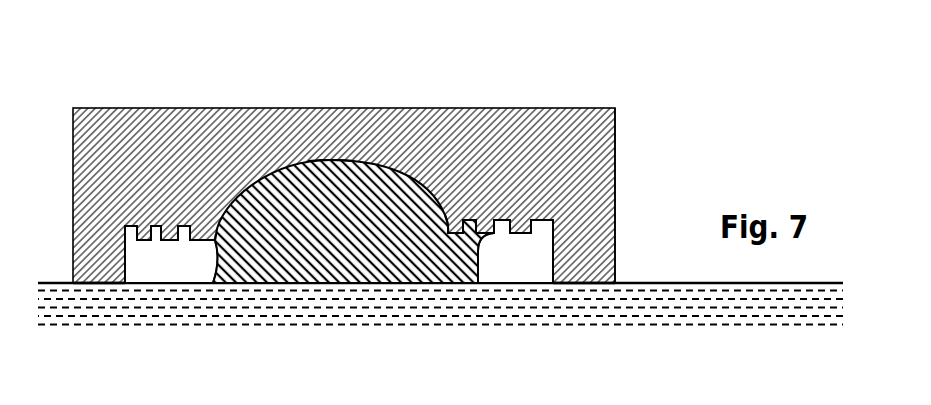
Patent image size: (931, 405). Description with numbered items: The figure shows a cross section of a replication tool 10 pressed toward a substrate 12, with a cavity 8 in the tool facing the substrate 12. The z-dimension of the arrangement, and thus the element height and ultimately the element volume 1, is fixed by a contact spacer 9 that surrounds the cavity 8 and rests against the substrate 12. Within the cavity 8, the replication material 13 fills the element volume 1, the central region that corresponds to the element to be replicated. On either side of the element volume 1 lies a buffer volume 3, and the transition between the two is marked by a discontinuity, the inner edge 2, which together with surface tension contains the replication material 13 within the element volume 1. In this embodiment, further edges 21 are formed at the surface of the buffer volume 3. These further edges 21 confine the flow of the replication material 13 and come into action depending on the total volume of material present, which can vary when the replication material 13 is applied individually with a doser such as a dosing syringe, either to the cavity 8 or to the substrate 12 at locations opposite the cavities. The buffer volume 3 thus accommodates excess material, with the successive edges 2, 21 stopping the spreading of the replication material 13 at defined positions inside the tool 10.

The element volume 1 is at (286, 262).
The inner edge 2 is at (207, 228).
The buffer volume 3 is at (165, 262).
The cavity 8 is at (258, 108).
The contact spacer 9 is at (82, 277).
The tool 10 is at (595, 130).
The substrate 12 is at (362, 306).
The replication material 13 is at (325, 152).
The further edges 21 is at (158, 218).